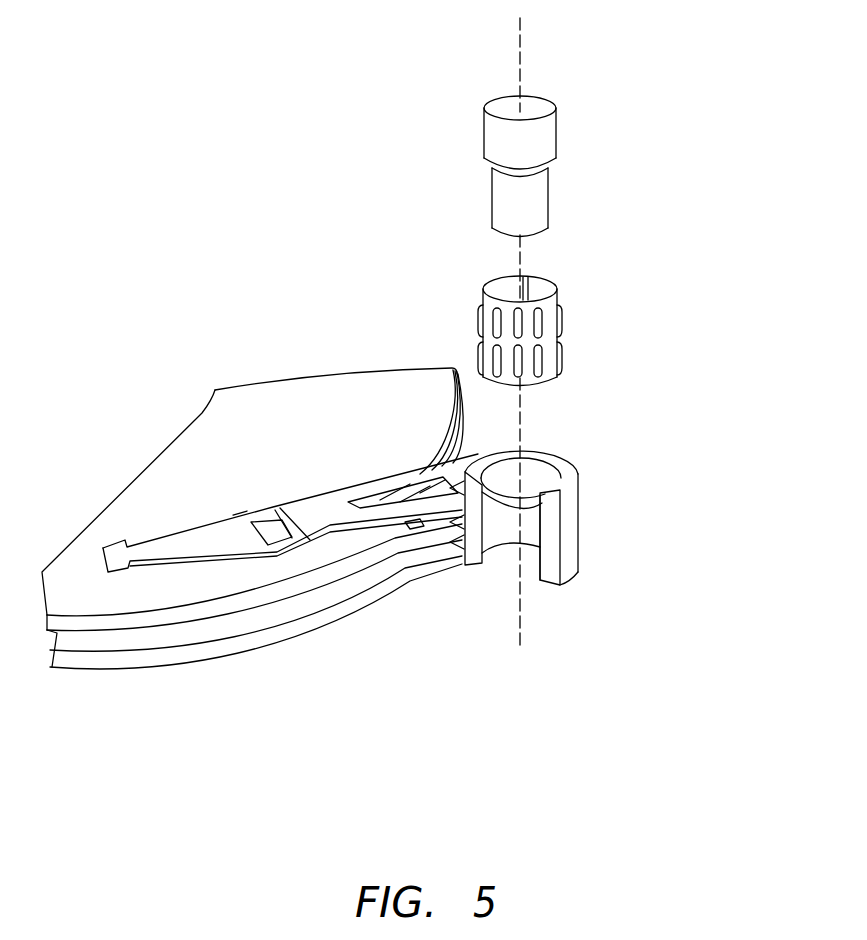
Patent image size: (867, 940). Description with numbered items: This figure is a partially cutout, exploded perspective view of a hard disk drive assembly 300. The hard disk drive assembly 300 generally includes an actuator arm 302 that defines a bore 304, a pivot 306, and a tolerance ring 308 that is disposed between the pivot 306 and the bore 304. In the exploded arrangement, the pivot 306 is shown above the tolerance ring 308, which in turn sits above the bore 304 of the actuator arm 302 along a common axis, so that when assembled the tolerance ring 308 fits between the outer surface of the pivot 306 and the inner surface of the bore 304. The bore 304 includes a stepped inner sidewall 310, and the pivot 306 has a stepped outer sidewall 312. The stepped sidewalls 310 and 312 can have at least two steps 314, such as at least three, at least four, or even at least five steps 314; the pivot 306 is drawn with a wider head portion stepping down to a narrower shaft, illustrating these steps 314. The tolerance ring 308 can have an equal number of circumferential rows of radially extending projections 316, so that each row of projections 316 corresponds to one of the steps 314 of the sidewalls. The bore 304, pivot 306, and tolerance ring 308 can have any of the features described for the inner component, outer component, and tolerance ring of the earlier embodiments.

The hard disk drive assembly 300 is at (667, 57).
The actuator arm 302 is at (572, 575).
The bore 304 is at (500, 554).
The pivot 306 is at (552, 203).
The tolerance ring 308 is at (579, 315).
The stepped inner sidewall 310 is at (533, 530).
The stepped outer sidewall 312 is at (518, 172).
The steps 314 is at (562, 105).
The radially extending projections 316 is at (560, 350).